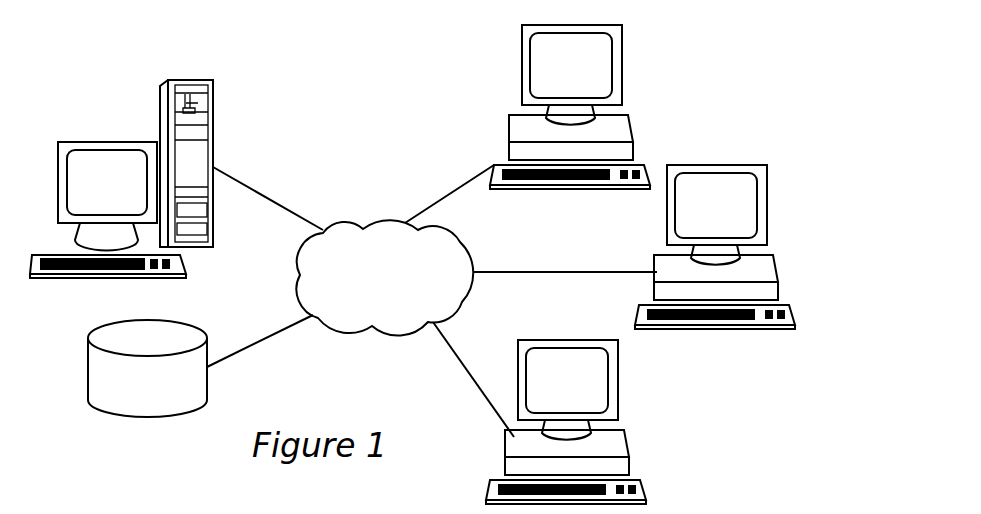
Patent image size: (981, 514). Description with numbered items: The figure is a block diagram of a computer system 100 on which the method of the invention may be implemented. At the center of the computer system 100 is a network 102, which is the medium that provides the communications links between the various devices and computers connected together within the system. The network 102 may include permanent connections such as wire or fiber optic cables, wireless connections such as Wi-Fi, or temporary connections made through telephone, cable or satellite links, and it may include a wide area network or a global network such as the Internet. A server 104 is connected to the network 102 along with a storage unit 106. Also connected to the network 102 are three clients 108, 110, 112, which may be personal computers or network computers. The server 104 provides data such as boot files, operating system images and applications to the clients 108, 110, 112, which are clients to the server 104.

The computer system 100 is at (256, 91).
The network 102 is at (372, 326).
The server 104 is at (160, 96).
The storage unit 106 is at (88, 352).
The client 108 is at (623, 33).
The client 110 is at (768, 172).
The client 112 is at (620, 345).